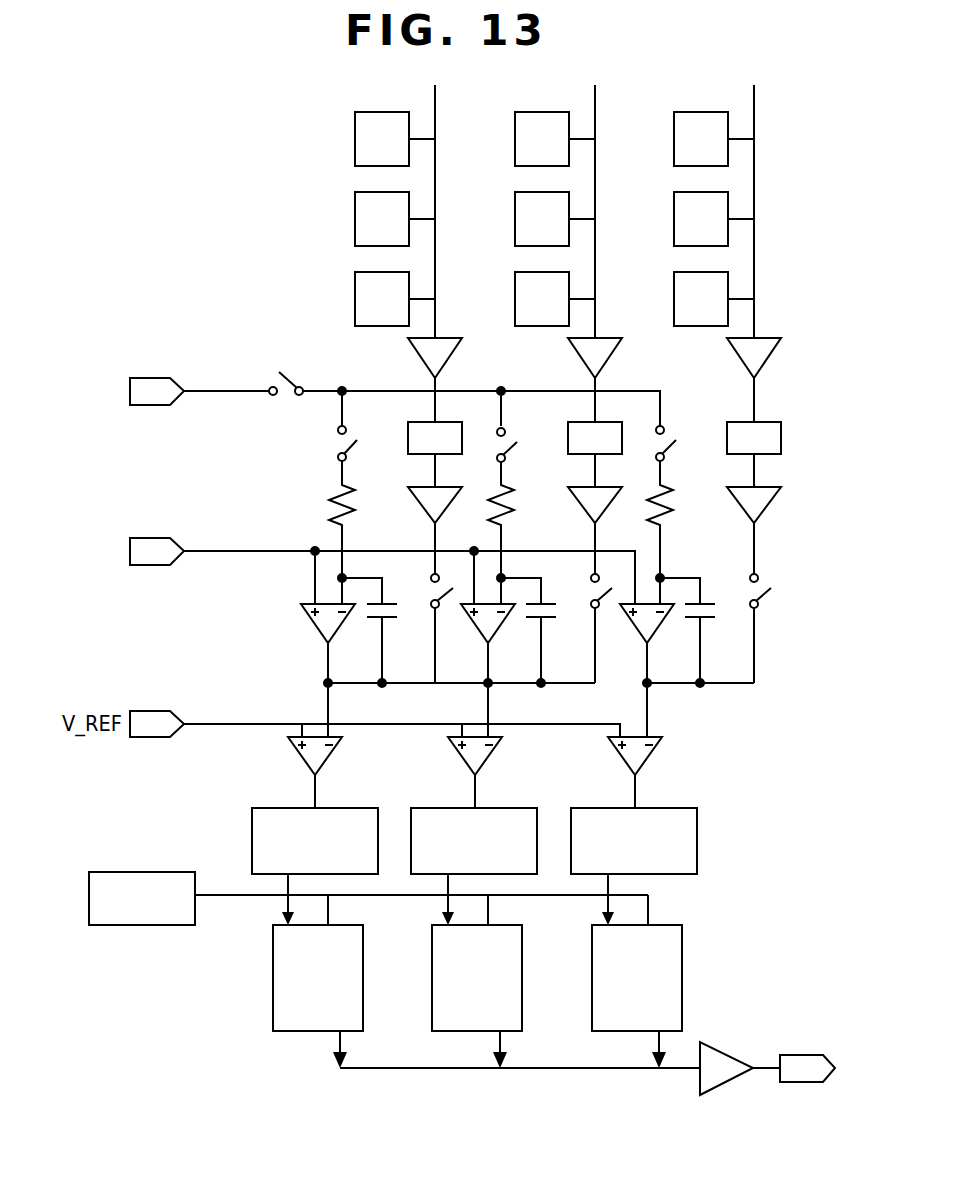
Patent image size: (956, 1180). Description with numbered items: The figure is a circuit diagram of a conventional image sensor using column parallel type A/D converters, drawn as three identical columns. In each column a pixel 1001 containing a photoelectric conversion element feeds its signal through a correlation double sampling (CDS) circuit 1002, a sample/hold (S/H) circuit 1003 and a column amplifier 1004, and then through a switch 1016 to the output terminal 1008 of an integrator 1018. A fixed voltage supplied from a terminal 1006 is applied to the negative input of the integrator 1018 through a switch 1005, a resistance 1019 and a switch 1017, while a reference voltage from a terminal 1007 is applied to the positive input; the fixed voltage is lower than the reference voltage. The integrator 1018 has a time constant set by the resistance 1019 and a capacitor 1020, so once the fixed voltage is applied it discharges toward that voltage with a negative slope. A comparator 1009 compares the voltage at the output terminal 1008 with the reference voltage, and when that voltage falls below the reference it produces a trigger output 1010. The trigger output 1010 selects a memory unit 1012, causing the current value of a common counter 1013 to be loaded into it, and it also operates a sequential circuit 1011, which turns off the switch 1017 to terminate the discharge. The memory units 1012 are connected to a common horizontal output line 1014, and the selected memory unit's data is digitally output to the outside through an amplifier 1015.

The pixel 1001 is at (355, 122).
The correlation double sampling (CDS) circuit 1002 is at (446, 338).
The sample/hold (S/H) circuit 1003 is at (427, 421).
The column amplifier 1004 is at (427, 486).
The switch 1005 is at (314, 364).
The terminal 1006 is at (150, 378).
The terminal 1007 is at (150, 538).
The output terminal 1008 is at (325, 683).
The comparator 1009 is at (330, 748).
The trigger output 1010 is at (315, 792).
The sequential circuit 1011 is at (252, 845).
The memory unit 1012 is at (273, 963).
The common counter 1013 is at (152, 872).
The common horizontal output line 1014 is at (540, 1068).
The amplifier 1015 is at (720, 1048).
The switch 1016 is at (444, 610).
The switch 1017 is at (338, 432).
The integrator 1018 is at (304, 604).
The resistance 1019 is at (329, 500).
The capacitor 1020 is at (405, 579).